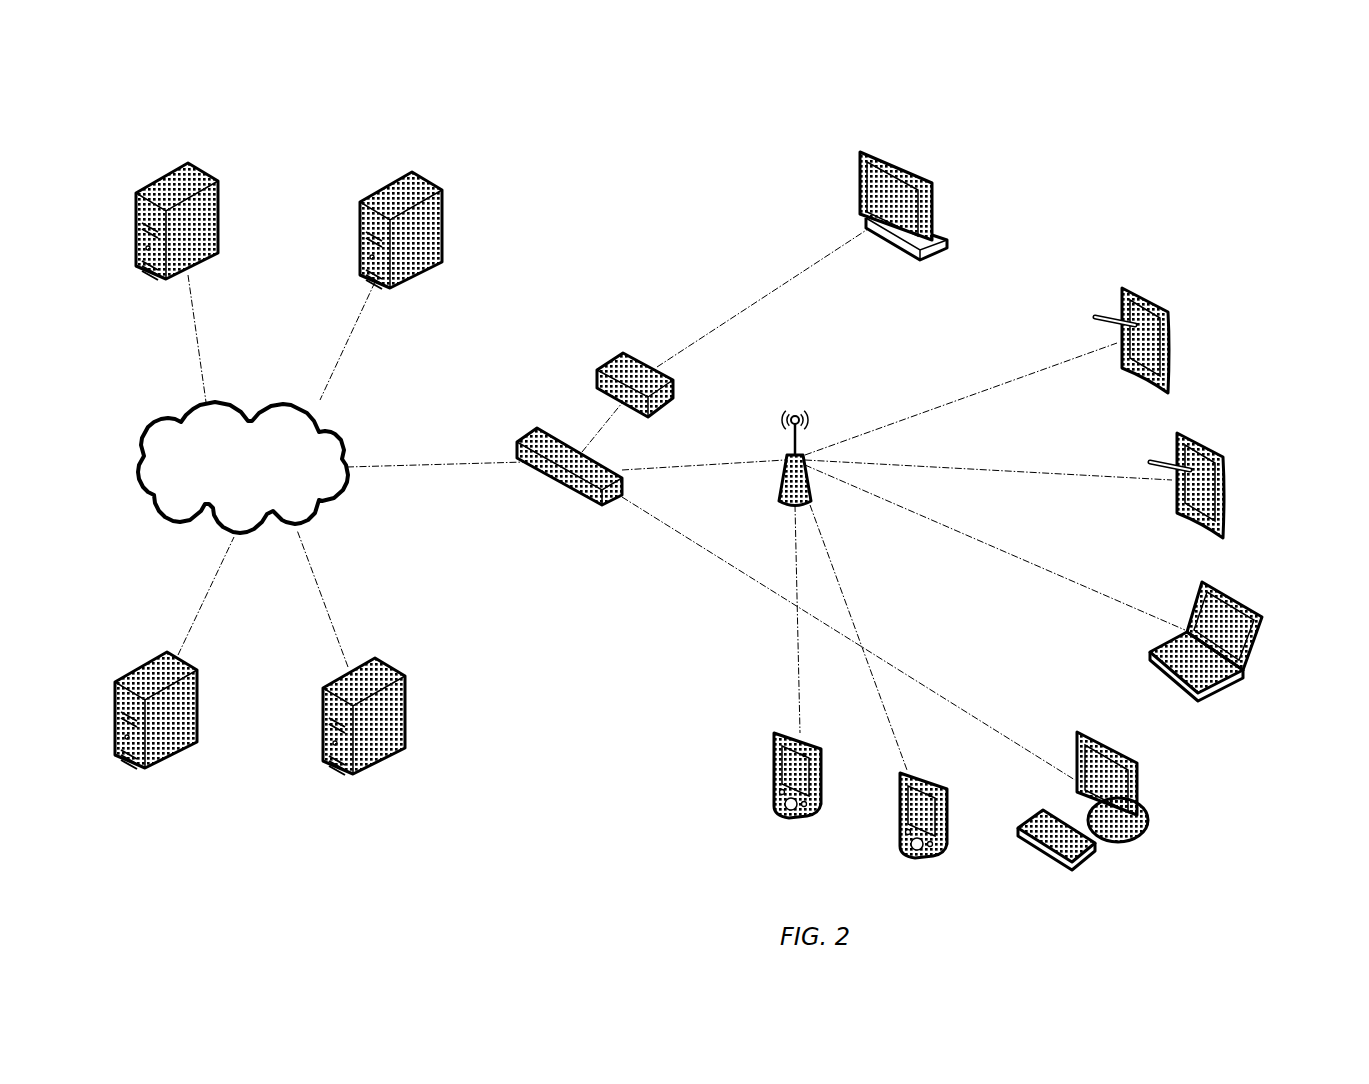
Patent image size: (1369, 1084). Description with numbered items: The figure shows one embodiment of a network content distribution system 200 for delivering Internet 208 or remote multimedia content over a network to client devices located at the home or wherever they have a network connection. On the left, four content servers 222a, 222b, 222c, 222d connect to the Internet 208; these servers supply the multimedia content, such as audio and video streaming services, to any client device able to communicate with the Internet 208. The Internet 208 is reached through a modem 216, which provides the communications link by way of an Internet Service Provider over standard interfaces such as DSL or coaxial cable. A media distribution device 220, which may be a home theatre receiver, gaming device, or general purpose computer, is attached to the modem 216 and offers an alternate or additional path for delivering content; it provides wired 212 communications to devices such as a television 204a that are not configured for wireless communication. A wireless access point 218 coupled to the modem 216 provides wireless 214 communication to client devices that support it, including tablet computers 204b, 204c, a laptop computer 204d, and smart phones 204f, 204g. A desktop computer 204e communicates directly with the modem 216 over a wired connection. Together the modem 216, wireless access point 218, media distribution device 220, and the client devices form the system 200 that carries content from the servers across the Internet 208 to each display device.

The network content distribution system 200 is at (262, 80).
The Internet 208 is at (192, 405).
The wired connection 212 is at (780, 280).
The wireless communication 214 is at (1000, 388).
The modem 216 is at (600, 508).
The wireless access point 218 is at (797, 393).
The media distribution device 220 is at (622, 352).
The content server 222a is at (186, 162).
The content server 222b is at (410, 170).
The content server 222c is at (165, 651).
The content server 222d is at (335, 676).
The television 204a is at (928, 175).
The tablet computer 204b is at (1152, 296).
The tablet computer 204c is at (1215, 447).
The laptop computer 204d is at (1245, 603).
The desktop computer 204e is at (1138, 760).
The smart phone 204f is at (930, 855).
The smart phone 204g is at (790, 820).